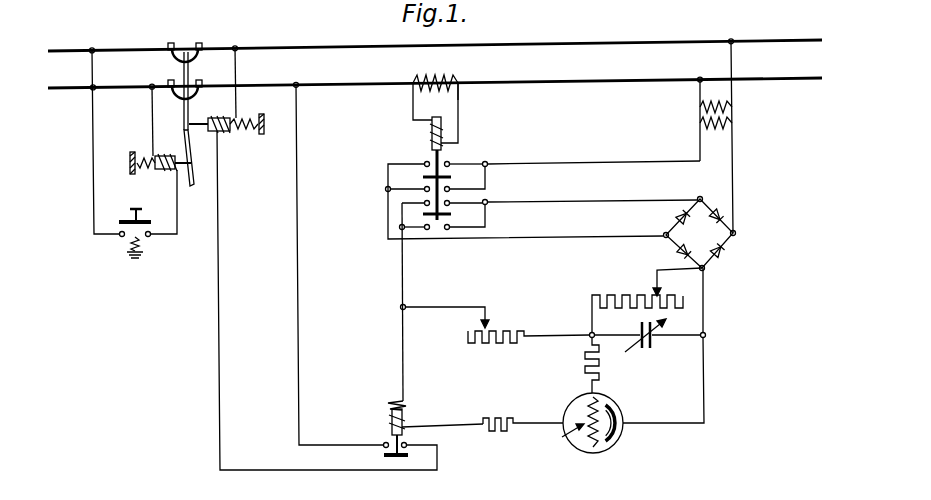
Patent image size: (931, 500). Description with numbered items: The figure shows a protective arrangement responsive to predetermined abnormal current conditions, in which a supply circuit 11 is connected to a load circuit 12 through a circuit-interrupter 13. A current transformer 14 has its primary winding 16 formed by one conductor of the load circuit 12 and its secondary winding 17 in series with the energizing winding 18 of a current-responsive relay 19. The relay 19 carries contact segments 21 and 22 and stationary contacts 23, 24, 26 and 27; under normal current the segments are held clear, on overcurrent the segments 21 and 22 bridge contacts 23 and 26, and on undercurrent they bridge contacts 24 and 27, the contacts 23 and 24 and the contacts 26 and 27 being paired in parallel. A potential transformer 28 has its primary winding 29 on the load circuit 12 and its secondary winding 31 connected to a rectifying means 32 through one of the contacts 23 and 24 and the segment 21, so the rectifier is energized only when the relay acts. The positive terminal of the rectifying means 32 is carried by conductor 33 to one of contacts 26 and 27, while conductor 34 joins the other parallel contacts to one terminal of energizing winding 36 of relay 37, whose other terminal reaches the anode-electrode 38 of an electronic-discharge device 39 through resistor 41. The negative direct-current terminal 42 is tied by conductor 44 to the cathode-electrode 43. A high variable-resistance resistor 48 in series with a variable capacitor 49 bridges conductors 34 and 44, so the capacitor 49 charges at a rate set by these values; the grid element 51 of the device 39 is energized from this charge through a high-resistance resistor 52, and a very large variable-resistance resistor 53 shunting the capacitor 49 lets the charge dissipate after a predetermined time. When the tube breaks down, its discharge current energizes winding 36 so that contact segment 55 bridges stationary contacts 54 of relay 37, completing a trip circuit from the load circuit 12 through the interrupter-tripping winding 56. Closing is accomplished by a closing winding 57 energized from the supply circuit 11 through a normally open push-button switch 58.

The supply circuit 11 is at (112, 57).
The load circuit 12 is at (326, 62).
The circuit-interrupter 13 is at (190, 82).
The current transformer 14 is at (409, 84).
The primary winding 16 is at (468, 82).
The secondary winding 17 is at (442, 78).
The energizing winding 18 is at (431, 128).
The current-responsive relay 19 is at (488, 156).
The contact segment 21 is at (450, 178).
The contact segment 22 is at (451, 214).
The stationary contact 23 is at (424, 164).
The stationary contact 24 is at (424, 189).
The stationary contact 26 is at (452, 203).
The stationary contact 27 is at (447, 232).
The potential transformer 28 is at (688, 128).
The primary winding 29 is at (735, 106).
The secondary winding 31 is at (735, 122).
The rectifying means 32 is at (714, 244).
The conductor 33 is at (578, 201).
The conductor 34 is at (404, 282).
The energizing winding 36 is at (402, 398).
The relay 37 is at (371, 418).
The anode-electrode 38 is at (574, 435).
The electronic-discharge device 39 is at (654, 406).
The resistor 41 is at (496, 416).
The negative direct-current terminal 42 is at (706, 268).
The cathode-electrode 43 is at (620, 440).
The conductor 44 is at (705, 300).
The variable-resistance resistor 48 is at (504, 330).
The variable capacitor 49 is at (651, 346).
The grid element 51 is at (597, 447).
The high-resistance resistor 52 is at (588, 372).
The variable-resistance resistor 53 is at (610, 295).
The stationary contacts 54 is at (385, 442).
The contact segment 55 is at (382, 456).
The interrupter-tripping winding 56 is at (222, 132).
The closing winding 57 is at (168, 152).
The push-button switch 58 is at (142, 222).